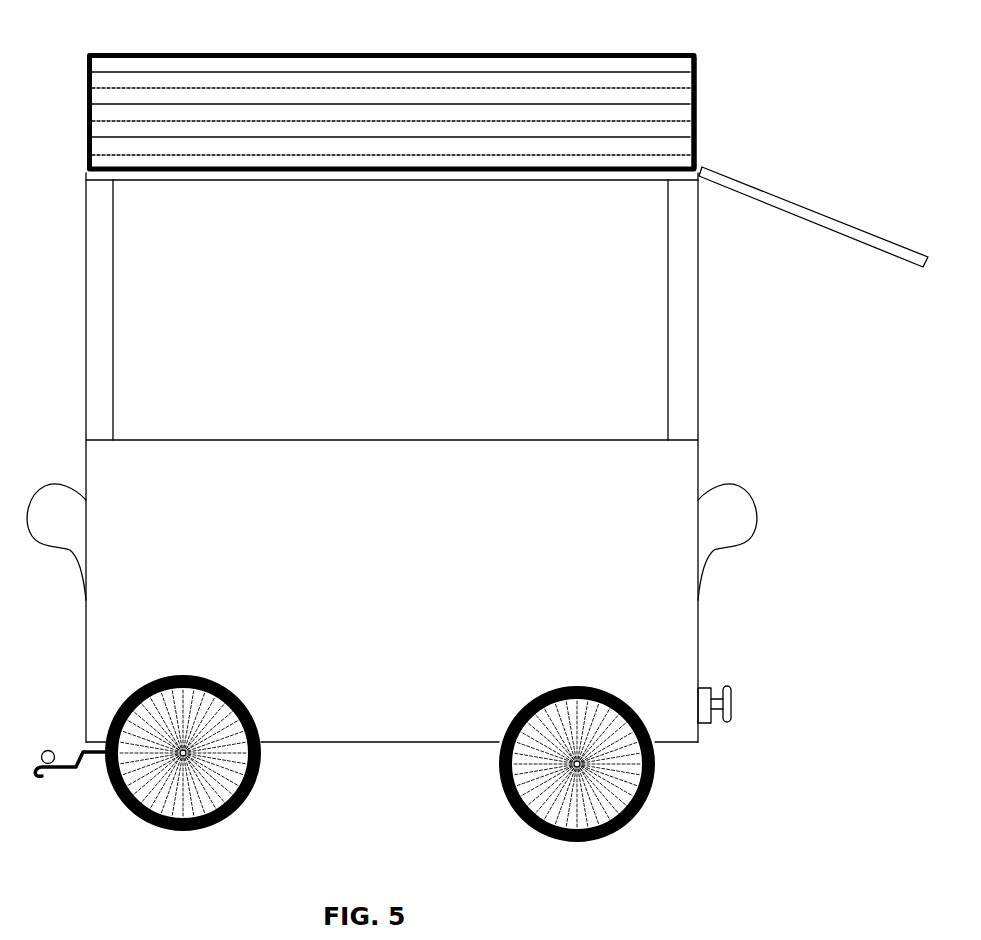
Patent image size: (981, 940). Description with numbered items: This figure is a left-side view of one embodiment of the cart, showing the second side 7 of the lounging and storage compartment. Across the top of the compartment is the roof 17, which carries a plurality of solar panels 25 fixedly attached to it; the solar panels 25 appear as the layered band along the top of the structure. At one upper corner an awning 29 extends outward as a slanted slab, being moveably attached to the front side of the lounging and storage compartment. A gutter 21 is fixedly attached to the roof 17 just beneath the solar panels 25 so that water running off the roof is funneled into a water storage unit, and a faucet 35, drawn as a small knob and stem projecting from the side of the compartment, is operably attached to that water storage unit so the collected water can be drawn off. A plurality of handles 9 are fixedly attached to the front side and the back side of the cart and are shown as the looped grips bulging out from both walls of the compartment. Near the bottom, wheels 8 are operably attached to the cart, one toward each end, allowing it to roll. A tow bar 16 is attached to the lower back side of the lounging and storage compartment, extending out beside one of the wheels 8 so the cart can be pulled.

The second side 7 is at (497, 314).
The wheels 8 is at (258, 790).
The handles 9 is at (50, 490).
The tow bar 16 is at (40, 752).
The roof 17 is at (183, 62).
The gutter 21 is at (537, 185).
The solar panels 25 is at (699, 112).
The awning 29 is at (838, 215).
The faucet 35 is at (730, 724).